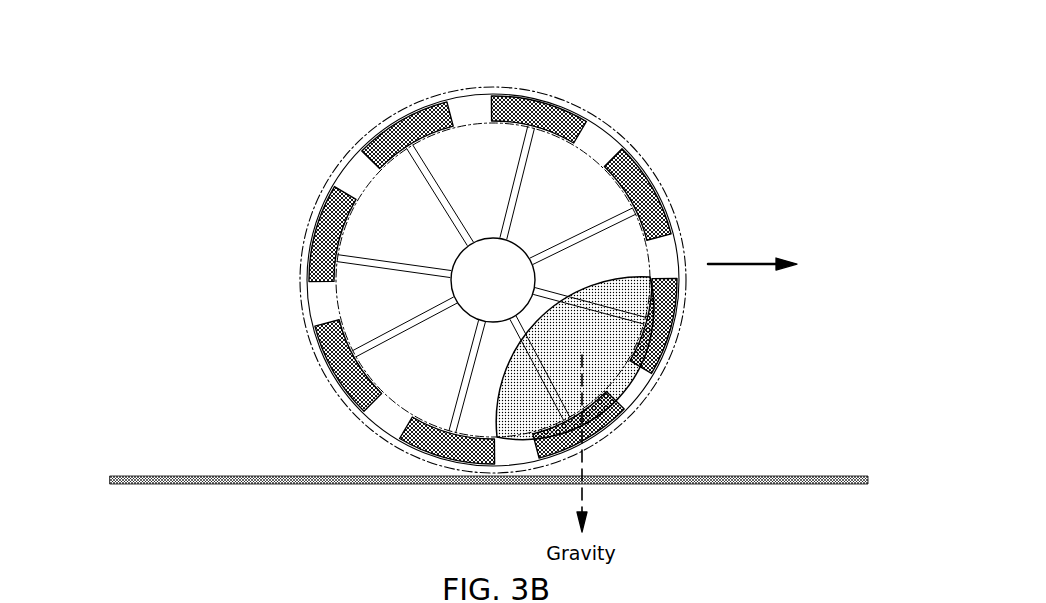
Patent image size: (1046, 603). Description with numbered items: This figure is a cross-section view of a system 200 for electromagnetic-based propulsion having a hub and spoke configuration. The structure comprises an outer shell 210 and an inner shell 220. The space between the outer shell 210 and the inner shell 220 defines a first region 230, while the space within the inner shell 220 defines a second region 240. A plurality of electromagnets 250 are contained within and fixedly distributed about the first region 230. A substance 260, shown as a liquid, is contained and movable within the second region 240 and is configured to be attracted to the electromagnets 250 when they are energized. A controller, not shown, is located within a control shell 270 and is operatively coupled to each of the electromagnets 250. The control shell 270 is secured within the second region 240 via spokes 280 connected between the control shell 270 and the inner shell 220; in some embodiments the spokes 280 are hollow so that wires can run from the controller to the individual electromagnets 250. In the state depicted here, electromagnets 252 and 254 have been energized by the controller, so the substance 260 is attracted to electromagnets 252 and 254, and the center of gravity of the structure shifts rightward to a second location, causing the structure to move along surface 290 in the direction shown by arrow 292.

The system 200 is at (113, 79).
The outer shell 210 is at (383, 127).
The inner shell 220 is at (367, 180).
The first region 230 is at (593, 138).
The second region 240 is at (478, 170).
The electromagnets 250 is at (323, 226).
The electromagnet 252 is at (663, 328).
The electromagnet 254 is at (590, 434).
The substance 260 is at (603, 362).
The control shell 270 is at (453, 293).
The spokes 280 is at (423, 160).
The surface 290 is at (150, 477).
The arrow 292 is at (750, 262).